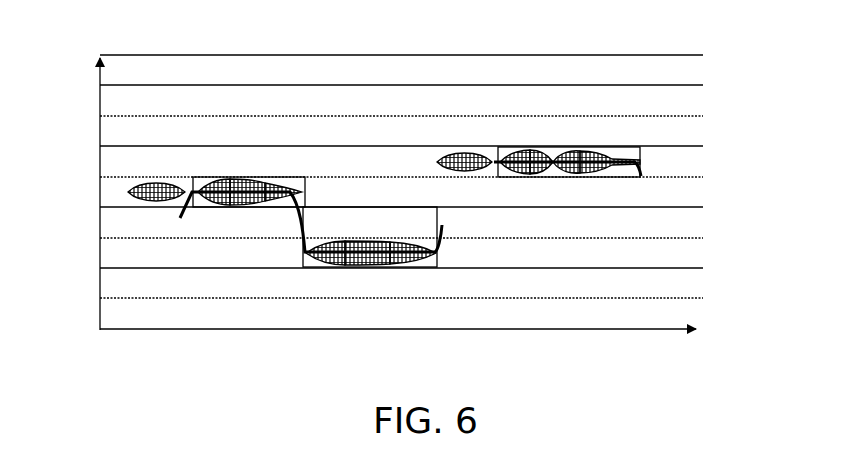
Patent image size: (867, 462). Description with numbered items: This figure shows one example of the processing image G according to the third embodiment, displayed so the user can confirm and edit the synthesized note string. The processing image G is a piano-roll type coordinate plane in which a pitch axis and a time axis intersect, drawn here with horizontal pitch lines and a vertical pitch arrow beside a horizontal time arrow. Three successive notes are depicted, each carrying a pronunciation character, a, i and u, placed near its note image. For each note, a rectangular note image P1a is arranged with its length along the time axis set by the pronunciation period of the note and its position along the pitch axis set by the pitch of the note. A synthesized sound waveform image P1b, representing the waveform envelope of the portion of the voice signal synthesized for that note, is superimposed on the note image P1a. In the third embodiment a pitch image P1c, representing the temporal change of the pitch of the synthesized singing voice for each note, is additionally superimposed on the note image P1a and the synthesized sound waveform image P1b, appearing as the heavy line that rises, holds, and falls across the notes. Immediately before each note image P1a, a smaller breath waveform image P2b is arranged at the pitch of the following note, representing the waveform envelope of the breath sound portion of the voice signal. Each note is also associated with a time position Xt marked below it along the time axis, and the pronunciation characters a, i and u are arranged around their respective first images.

The processing image G is at (730, 98).
The phoneme a note a is at (241, 275).
The phoneme i note i is at (366, 337).
The phoneme u note u is at (565, 240).
The breath waveform image P2b is at (161, 180).
The pitch image P1c is at (207, 180).
The note image P1a is at (238, 180).
The synthesized sound waveform image P1b is at (277, 180).
The time position of note Xt is at (404, 300).